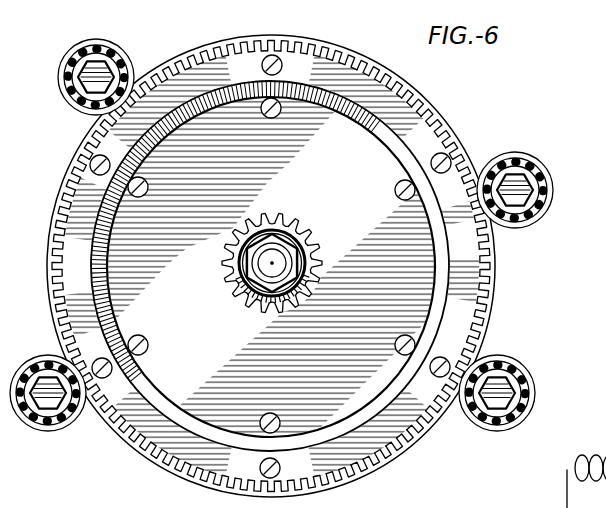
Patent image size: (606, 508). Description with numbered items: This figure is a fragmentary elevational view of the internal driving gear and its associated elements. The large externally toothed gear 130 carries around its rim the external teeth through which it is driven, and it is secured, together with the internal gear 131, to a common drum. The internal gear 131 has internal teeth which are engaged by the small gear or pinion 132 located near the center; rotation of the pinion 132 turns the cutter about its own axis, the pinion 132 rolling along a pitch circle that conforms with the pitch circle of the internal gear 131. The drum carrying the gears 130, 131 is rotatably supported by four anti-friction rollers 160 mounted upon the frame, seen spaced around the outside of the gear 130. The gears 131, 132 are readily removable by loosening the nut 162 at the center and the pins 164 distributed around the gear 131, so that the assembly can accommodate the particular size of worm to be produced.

The gear 130 is at (323, 70).
The internal gear 131 is at (334, 181).
The pinion 132 is at (305, 243).
The anti-friction rollers 160 is at (74, 44).
The nut 162 is at (257, 273).
The pins 164 is at (396, 191).